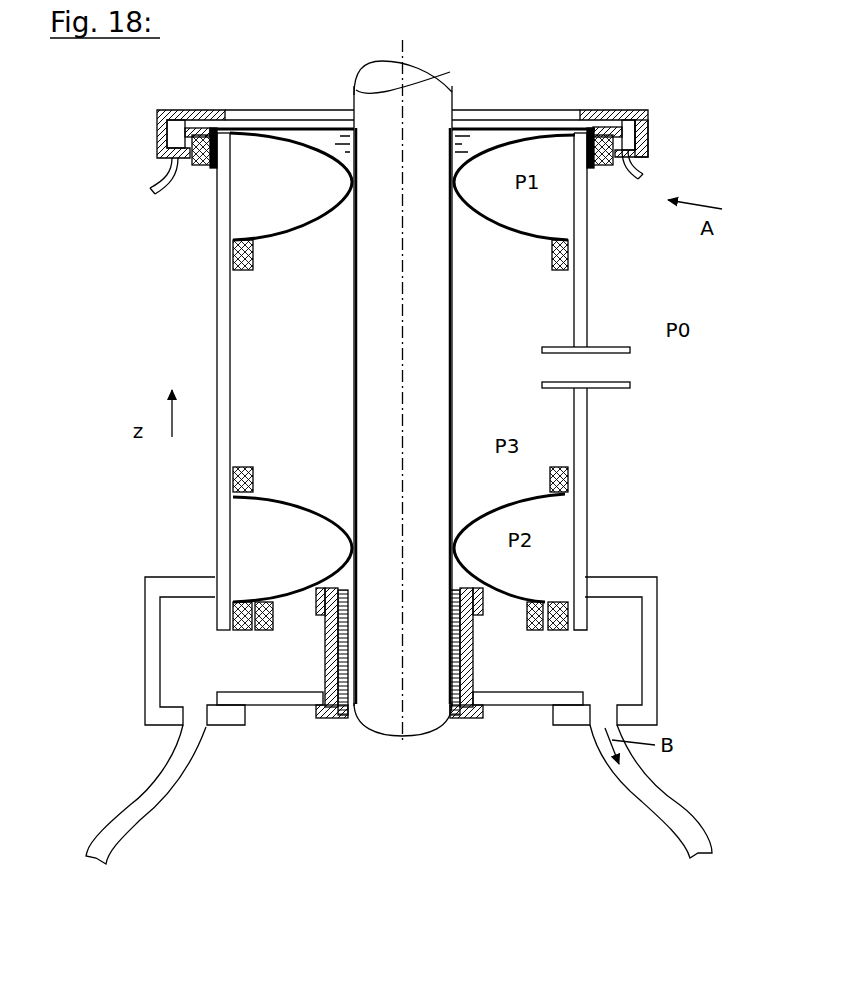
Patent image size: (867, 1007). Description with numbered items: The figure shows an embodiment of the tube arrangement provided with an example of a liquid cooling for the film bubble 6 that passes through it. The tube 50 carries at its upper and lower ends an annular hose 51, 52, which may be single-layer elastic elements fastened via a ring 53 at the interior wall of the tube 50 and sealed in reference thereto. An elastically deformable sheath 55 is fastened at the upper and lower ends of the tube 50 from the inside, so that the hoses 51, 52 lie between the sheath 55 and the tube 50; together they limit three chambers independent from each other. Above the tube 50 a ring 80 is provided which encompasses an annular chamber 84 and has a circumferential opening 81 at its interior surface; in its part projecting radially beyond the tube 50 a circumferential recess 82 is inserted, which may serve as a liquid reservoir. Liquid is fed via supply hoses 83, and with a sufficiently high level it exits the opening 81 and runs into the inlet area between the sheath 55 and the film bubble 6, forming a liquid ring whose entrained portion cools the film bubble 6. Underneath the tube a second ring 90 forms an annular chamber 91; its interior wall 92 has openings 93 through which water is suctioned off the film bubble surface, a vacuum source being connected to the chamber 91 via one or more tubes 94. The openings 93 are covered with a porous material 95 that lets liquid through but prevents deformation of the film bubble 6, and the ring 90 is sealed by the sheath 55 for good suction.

The film bubble 6 is at (453, 108).
The tube 50 is at (588, 312).
The annular hose 51 is at (535, 237).
The annular hose 52 is at (533, 500).
The ring 53 is at (570, 478).
The elastically deformable sheath 55 is at (455, 428).
The ring 80 is at (650, 152).
The circumferential opening 81 is at (603, 127).
The circumferential recess 82 is at (652, 145).
The supply hoses 83 is at (638, 183).
The annular chamber 84 is at (632, 140).
The second ring 90 is at (650, 625).
The annular chamber 91 is at (608, 670).
The interior wall 92 is at (472, 685).
The openings 93 is at (468, 670).
The tubes 94 is at (662, 800).
The porous material 95 is at (458, 712).